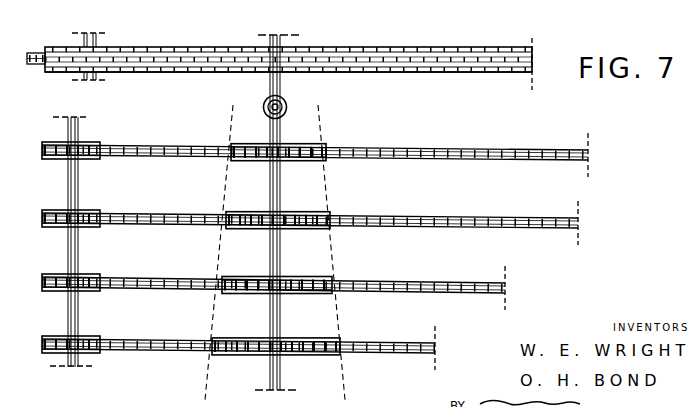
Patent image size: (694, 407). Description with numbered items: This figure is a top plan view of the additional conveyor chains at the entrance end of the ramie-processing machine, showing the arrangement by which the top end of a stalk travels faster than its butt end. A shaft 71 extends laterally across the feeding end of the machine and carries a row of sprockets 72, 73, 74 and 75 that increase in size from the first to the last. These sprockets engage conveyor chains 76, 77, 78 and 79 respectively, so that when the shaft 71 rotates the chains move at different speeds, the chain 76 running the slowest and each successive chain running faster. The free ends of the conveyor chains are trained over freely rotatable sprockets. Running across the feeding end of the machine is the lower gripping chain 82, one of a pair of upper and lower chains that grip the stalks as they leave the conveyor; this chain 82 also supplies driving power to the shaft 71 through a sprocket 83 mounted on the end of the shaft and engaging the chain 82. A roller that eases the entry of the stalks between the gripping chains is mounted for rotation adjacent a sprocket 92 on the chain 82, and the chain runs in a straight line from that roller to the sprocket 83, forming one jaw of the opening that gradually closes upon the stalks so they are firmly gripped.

The shaft 71 is at (282, 127).
The sprocket 72 is at (262, 160).
The sprocket 73 is at (262, 227).
The sprocket 74 is at (253, 288).
The sprocket 75 is at (238, 347).
The conveyor chain 76 is at (450, 148).
The conveyor chain 77 is at (438, 218).
The conveyor chain 78 is at (402, 280).
The conveyor chain 79 is at (395, 345).
The lower chain 82 is at (460, 57).
The sprocket 83 is at (247, 75).
The sprocket 92 is at (73, 66).